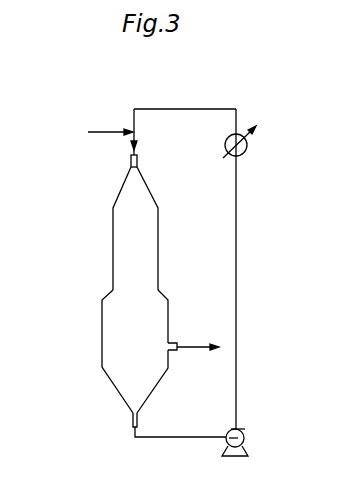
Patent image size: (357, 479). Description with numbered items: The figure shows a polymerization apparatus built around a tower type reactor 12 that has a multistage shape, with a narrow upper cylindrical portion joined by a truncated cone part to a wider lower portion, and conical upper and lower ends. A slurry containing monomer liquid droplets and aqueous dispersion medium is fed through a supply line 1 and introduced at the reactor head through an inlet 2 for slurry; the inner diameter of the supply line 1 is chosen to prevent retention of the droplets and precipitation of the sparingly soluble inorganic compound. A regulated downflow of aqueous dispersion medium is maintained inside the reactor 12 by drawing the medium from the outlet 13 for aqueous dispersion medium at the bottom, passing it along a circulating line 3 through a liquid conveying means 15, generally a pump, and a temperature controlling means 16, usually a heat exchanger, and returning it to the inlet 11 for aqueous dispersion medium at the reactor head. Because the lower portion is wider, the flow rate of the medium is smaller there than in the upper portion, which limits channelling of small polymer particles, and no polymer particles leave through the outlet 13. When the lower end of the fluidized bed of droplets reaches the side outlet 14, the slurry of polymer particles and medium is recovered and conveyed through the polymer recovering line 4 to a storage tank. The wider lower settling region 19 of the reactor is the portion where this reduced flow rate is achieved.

The supply line 1 is at (112, 133).
The inlet for slurry 2 is at (130, 128).
The circulating line 3 is at (236, 278).
The polymer recovering line 4 is at (192, 349).
The inlet for aqueous dispersion medium 11 is at (138, 157).
The tower type reactor 12 is at (113, 233).
The outlet for aqueous dispersion medium 13 is at (132, 420).
The outlet 14 is at (168, 345).
The liquid conveying means 15 is at (245, 436).
The temperature controlling means 16 is at (247, 148).
The wide settling zone 19 is at (102, 337).